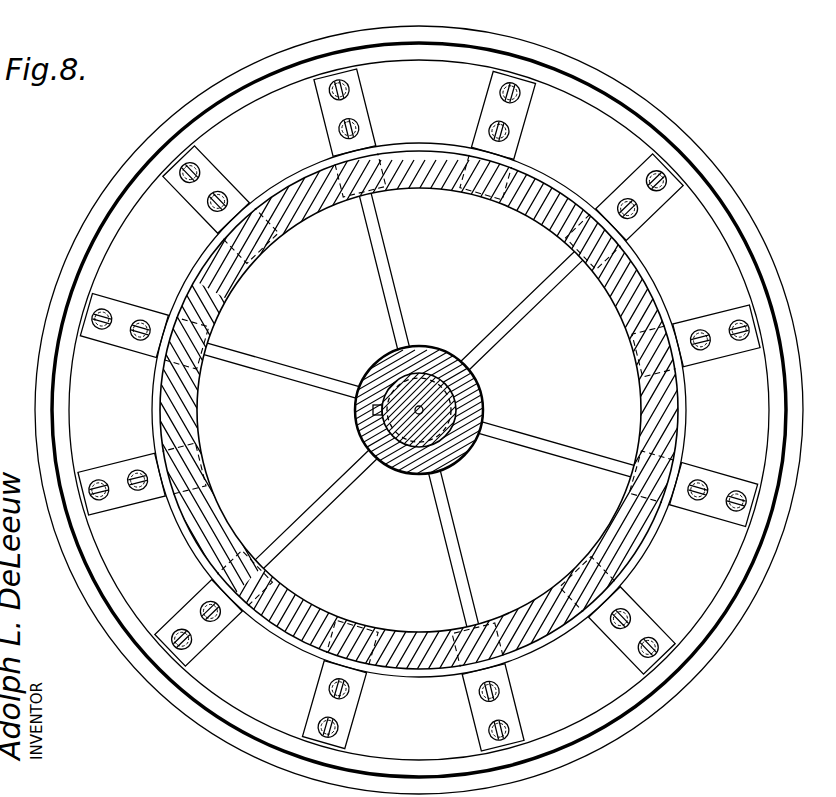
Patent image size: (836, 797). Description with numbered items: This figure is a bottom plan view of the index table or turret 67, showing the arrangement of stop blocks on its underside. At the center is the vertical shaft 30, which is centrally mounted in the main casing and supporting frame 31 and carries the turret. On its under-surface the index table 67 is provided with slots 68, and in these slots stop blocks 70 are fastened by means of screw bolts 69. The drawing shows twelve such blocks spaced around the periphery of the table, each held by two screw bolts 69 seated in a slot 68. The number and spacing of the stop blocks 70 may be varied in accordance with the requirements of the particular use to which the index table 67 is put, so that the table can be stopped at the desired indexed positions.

The index table 67 is at (103, 197).
The main casing and supporting frame 31 is at (193, 281).
The vertical shaft 30 is at (422, 377).
The slots 68 is at (110, 460).
The screw bolts 69 is at (198, 593).
The stop blocks 70 is at (175, 628).